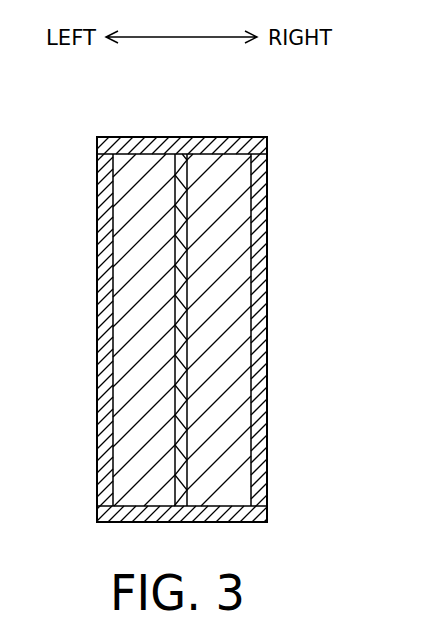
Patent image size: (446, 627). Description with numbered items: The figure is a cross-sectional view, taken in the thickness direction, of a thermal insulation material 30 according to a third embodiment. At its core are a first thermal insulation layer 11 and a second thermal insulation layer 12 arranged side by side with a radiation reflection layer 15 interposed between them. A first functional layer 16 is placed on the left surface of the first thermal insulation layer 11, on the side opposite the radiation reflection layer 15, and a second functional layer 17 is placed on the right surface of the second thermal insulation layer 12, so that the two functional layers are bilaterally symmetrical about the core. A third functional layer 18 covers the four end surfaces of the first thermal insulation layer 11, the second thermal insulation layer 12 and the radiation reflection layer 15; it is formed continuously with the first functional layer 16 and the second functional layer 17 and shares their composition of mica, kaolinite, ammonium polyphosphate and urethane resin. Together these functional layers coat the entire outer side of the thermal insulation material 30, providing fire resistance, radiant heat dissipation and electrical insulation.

The first thermal insulation layer 11 is at (131, 175).
The second thermal insulation layer 12 is at (228, 173).
The radiation reflection layer 15 is at (183, 352).
The first functional layer 16 is at (100, 288).
The second functional layer 17 is at (260, 288).
The third functional layer 18 is at (183, 147).
The thermal insulation material 30 is at (305, 138).